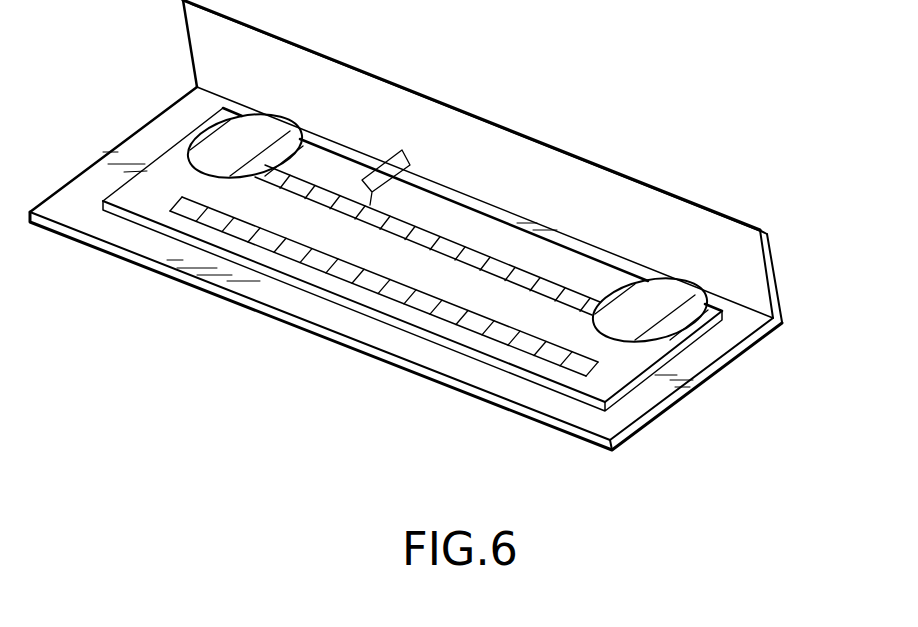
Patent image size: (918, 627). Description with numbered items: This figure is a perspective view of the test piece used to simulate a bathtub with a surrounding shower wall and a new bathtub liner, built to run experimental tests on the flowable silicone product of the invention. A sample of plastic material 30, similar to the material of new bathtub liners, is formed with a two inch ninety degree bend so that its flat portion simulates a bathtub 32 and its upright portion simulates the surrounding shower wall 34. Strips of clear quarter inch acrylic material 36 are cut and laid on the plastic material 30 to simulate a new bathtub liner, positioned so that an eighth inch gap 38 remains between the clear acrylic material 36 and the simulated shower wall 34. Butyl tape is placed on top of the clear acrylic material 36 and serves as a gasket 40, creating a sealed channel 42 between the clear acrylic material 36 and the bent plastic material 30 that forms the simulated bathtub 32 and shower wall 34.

The plastic material 30 is at (433, 225).
The simulated bathtub 32 is at (372, 330).
The simulated shower wall 34 is at (577, 152).
The clear acrylic material 36 is at (158, 197).
The gap 38 is at (600, 255).
The gasket 40 is at (227, 152).
The sealed channel 42 is at (380, 165).